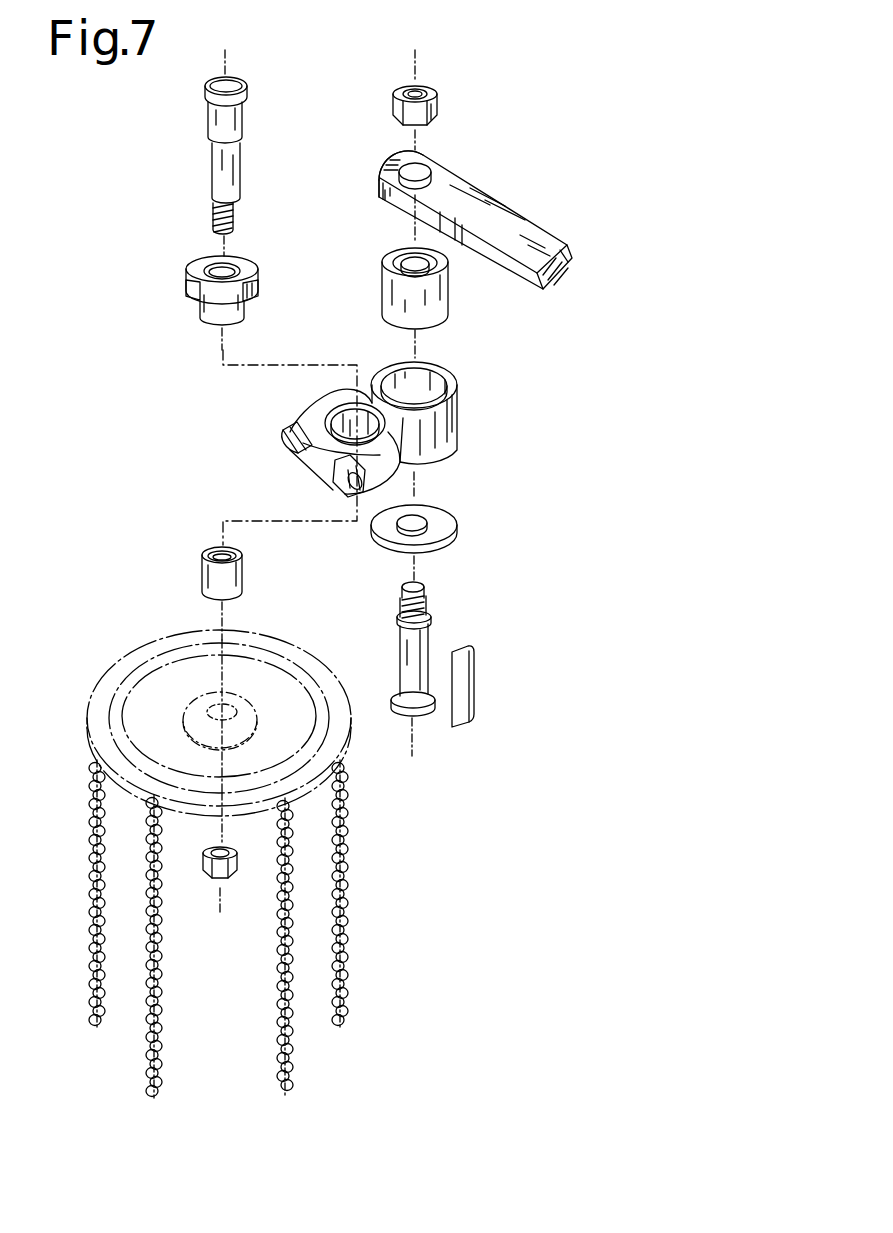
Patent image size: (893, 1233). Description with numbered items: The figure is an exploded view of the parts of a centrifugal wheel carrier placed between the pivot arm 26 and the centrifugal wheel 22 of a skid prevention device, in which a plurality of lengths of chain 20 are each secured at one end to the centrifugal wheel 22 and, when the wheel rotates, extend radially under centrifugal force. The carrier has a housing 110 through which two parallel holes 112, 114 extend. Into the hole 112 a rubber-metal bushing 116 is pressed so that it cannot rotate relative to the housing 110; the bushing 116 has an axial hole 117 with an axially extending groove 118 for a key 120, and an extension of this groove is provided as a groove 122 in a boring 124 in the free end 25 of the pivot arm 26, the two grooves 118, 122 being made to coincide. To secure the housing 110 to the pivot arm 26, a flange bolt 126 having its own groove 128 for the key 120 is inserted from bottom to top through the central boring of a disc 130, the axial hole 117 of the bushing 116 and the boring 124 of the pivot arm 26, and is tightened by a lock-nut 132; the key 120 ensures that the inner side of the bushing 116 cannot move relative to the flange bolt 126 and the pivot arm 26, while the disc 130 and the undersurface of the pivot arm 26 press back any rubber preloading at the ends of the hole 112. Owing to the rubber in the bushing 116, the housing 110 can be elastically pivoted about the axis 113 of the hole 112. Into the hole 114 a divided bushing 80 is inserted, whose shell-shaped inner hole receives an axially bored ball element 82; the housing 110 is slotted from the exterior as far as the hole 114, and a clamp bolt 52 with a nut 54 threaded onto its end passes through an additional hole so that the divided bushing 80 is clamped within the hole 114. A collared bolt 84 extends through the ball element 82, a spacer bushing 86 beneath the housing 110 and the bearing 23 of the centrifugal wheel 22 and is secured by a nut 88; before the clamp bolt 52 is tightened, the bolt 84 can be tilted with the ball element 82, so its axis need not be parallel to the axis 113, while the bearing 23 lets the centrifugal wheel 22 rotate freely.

The lengths of chain 20 is at (88, 900).
The centrifugal wheel 22 is at (293, 652).
The bearing 23 is at (245, 715).
The free end 25 is at (377, 193).
The pivot arm 26 is at (451, 198).
The clamp bolt 52 is at (283, 440).
The nut 54 is at (318, 478).
The divided bushing 80 is at (196, 286).
The ball element 82 is at (246, 290).
The bolt 84 is at (225, 176).
The spacer bushing 86 is at (210, 585).
The nut 88 is at (215, 881).
The housing 110 is at (364, 429).
The hole 112 is at (440, 380).
The axis 113 is at (418, 55).
The hole 114 is at (355, 415).
The rubber-metal bushing 116 is at (418, 291).
The axial hole 117 is at (392, 263).
The groove 118 is at (432, 266).
The key 120 is at (476, 701).
The groove 122 is at (432, 166).
The boring 124 is at (392, 165).
The flange bolt 126 is at (426, 707).
The groove 128 is at (447, 680).
The disc 130 is at (445, 528).
The lock-nut 132 is at (433, 102).